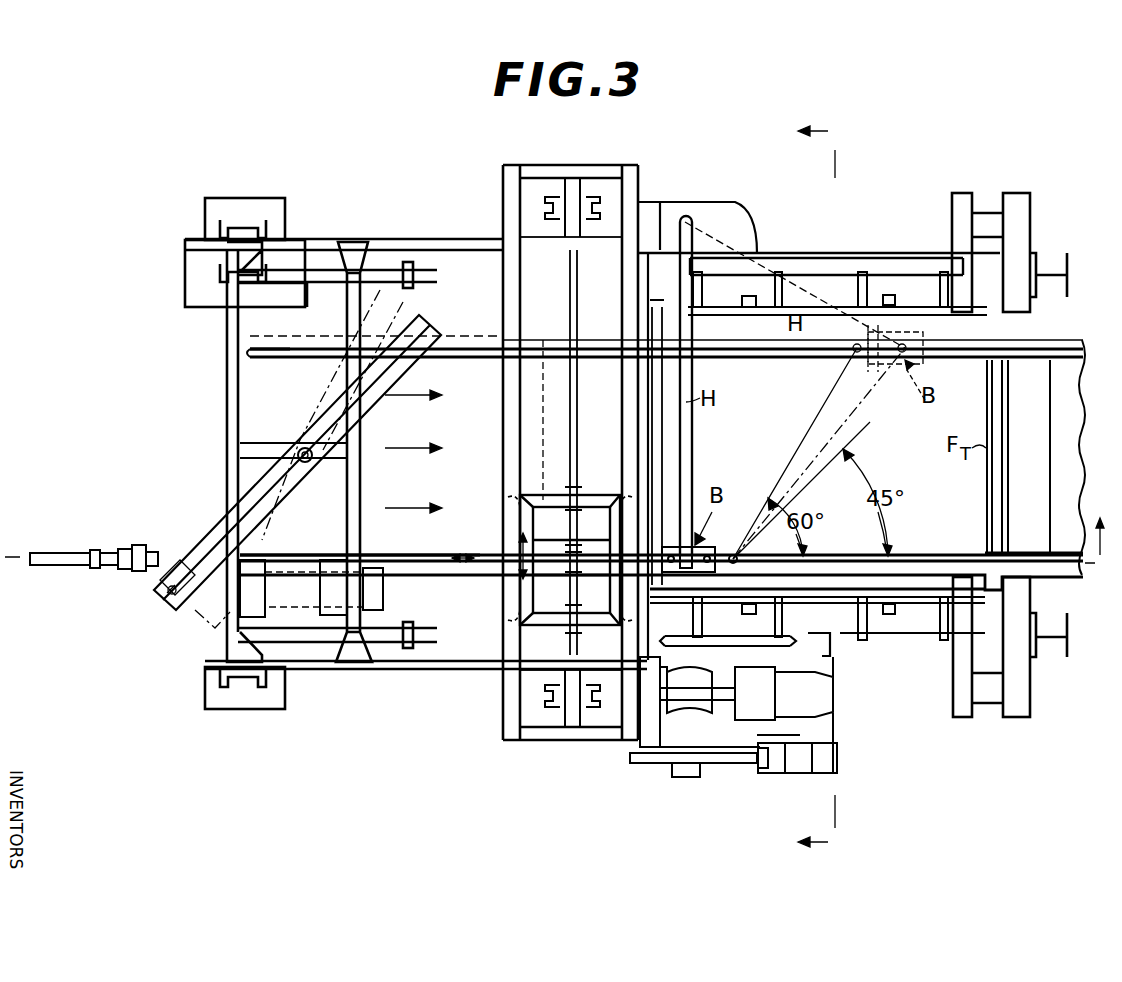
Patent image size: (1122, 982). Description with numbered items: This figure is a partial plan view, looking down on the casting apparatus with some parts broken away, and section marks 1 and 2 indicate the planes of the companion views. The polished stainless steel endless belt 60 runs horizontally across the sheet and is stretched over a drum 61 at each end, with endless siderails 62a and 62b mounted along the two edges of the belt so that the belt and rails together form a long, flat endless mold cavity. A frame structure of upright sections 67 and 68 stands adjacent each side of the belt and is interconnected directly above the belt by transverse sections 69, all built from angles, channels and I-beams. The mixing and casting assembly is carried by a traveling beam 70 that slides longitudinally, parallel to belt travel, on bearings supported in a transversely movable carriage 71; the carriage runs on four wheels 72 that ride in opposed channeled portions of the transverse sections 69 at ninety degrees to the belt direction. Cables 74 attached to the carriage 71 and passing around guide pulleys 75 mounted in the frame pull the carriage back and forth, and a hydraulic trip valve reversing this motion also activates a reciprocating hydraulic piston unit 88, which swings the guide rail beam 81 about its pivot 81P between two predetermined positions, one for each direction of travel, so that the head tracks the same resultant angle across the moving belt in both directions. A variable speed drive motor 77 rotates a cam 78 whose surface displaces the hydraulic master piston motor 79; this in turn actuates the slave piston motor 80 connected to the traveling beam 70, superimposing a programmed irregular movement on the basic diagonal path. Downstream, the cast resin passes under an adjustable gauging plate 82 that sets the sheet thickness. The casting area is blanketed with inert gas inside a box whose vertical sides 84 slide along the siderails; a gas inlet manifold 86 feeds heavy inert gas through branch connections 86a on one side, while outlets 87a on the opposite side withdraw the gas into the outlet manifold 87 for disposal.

The section line 1 is at (1102, 564).
The section line 2 is at (840, 487).
The endless conveyor belt 60 is at (483, 350).
The drum 61 is at (310, 336).
The endless siderail 62a is at (1016, 553).
The endless siderail 62b is at (276, 348).
The upright section 67 is at (628, 168).
The upright section 68 is at (510, 170).
The transverse section 69 is at (620, 364).
The traveling beam 70 is at (433, 555).
The transversely movable carriage 71 is at (529, 495).
The wheels 72 is at (510, 502).
The cables 74 is at (577, 307).
The guide pulleys 75 is at (588, 224).
The variable speed drive motor 77 is at (806, 696).
The cam 78 is at (723, 766).
The hydraulic master piston motor 79 is at (800, 770).
The slave piston motor 80 is at (159, 550).
The guide rail beam 81 is at (431, 326).
The pivot 81P is at (302, 452).
The gauging plate 82 is at (1042, 444).
The vertical sides 84 is at (758, 315).
The gas inlet manifold 86 is at (822, 660).
The branch connections 86a is at (772, 624).
The outlet manifold 87 is at (824, 262).
The outlets 87a is at (772, 290).
The reciprocating hydraulic piston unit 88 is at (311, 588).